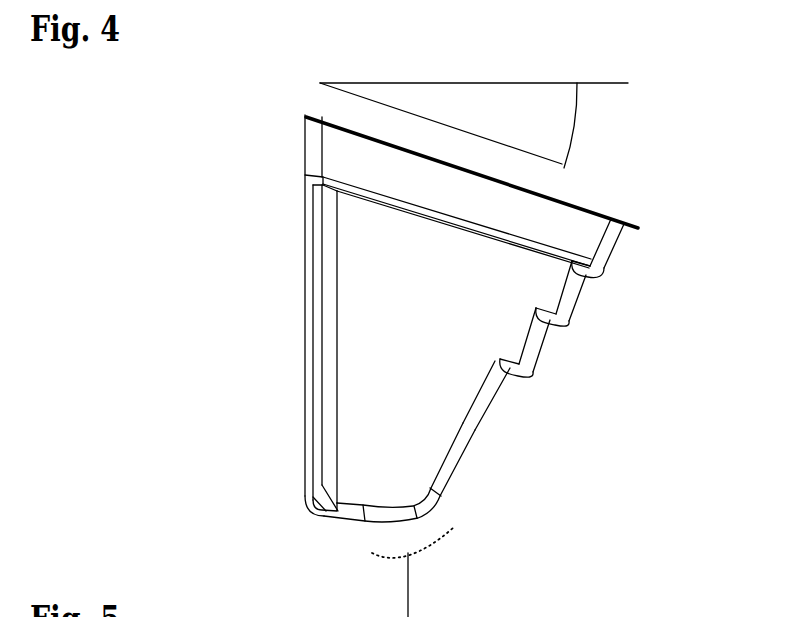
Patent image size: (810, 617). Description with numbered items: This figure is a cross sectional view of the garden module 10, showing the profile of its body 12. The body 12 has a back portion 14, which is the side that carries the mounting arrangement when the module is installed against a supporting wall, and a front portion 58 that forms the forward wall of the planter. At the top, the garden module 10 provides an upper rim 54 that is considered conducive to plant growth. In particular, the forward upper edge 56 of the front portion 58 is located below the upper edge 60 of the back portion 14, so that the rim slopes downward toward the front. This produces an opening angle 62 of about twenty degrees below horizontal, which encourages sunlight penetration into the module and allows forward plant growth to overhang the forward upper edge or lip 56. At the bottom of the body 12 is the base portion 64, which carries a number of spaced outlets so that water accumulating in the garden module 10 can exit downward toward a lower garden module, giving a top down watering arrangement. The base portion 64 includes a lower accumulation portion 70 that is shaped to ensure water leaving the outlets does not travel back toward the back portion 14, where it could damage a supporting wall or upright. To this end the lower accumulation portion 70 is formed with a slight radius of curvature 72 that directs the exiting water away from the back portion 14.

The garden module 10 is at (627, 153).
The body 12 is at (305, 260).
The back portion 14 is at (278, 340).
The upper rim 54 is at (688, 205).
The forward upper edge 56 is at (632, 223).
The front portion 58 is at (586, 356).
The upper edge 60 is at (306, 115).
The opening angle 62 is at (484, 102).
The base portion 64 is at (363, 522).
The lower accumulation portion 70 is at (437, 508).
The radius of curvature 72 is at (437, 547).